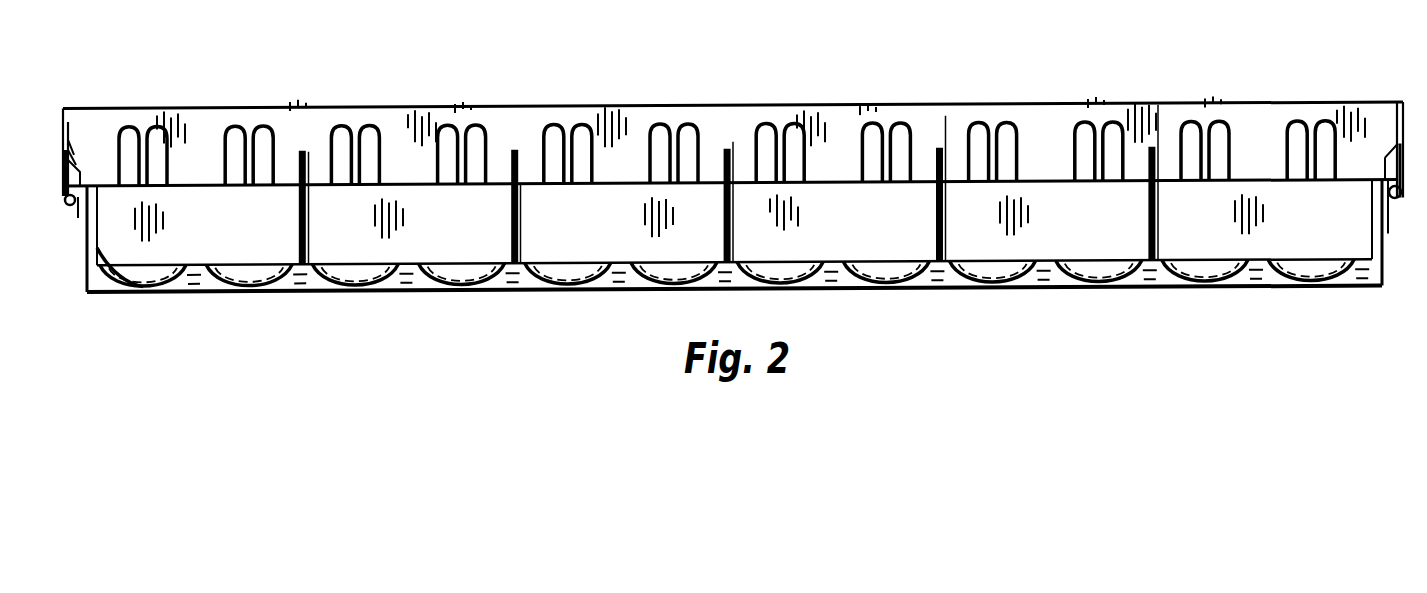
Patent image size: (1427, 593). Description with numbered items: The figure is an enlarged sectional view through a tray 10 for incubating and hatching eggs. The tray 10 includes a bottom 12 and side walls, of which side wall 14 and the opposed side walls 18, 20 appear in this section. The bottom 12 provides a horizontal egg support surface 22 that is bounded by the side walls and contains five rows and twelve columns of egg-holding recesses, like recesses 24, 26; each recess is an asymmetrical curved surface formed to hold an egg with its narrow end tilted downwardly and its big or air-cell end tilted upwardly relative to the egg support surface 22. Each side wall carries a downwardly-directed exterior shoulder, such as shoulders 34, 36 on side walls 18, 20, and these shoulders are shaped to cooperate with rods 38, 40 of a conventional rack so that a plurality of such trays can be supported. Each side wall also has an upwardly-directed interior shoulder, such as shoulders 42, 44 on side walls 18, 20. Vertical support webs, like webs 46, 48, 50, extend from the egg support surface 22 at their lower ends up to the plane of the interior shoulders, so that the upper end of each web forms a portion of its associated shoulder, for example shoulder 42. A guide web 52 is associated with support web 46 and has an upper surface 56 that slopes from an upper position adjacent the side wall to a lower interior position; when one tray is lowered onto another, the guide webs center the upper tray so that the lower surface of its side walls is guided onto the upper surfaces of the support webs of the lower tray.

The tray 10 is at (1002, 103).
The bottom 12 is at (1262, 262).
The side wall 14 is at (727, 106).
The side wall 18 is at (63, 106).
The side wall 20 is at (1398, 94).
The horizontal egg support surface 22 is at (1037, 260).
The egg-holding recess 24 is at (163, 267).
The egg-holding recess 26 is at (260, 267).
The exterior shoulder 34 is at (67, 204).
The exterior shoulder 36 is at (1397, 205).
The rod 38 is at (74, 206).
The rod 40 is at (1378, 198).
The interior shoulder 42 is at (86, 168).
The interior shoulder 44 is at (1383, 158).
The support web 46 is at (145, 288).
The support web 48 is at (306, 222).
The support web 50 is at (517, 216).
The guide web 52 is at (80, 162).
The upper surface 56 is at (76, 158).